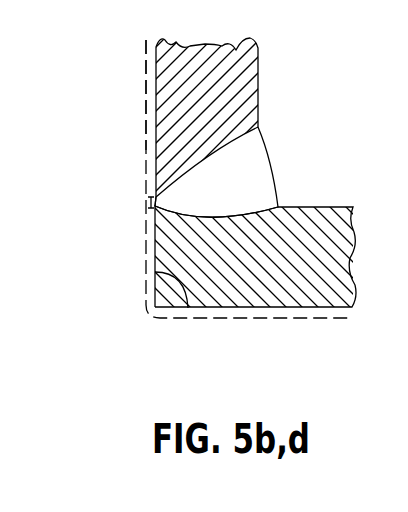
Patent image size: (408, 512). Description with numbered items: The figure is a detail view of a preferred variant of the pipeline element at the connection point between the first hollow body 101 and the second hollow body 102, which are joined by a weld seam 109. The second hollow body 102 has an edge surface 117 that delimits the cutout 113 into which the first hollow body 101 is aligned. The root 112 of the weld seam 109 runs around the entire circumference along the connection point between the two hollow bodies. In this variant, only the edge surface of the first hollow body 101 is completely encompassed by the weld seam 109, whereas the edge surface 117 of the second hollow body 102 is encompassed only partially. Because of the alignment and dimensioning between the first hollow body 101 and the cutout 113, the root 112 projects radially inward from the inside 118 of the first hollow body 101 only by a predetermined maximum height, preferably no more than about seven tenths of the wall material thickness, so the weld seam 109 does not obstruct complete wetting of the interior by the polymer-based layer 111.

The first hollow body 101 is at (160, 70).
The second hollow body 102 is at (310, 207).
The weld seam 109 is at (284, 156).
The polymer-based layer 111 is at (147, 134).
The root of the weld seam 112 is at (144, 186).
The cutout 113 is at (128, 301).
The edge surface of the second hollow body 117 is at (185, 307).
The inside of the first hollow body 118 is at (146, 113).